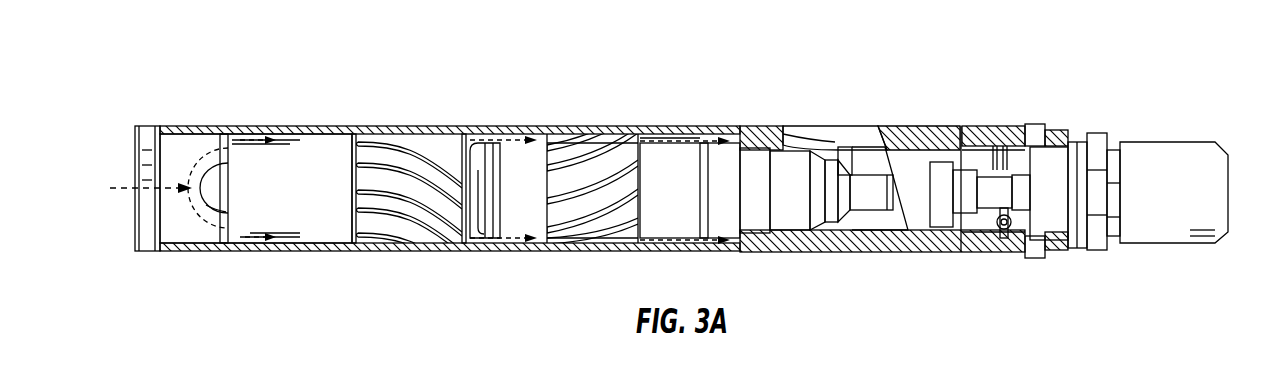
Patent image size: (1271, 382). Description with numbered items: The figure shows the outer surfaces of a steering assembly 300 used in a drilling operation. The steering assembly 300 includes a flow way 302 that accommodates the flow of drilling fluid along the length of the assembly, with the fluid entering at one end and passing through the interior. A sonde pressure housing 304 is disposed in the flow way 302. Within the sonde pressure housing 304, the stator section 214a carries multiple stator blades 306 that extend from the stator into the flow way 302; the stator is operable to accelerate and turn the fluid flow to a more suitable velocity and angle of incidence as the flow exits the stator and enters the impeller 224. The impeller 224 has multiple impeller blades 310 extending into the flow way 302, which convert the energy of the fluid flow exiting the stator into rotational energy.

The steering assembly 300 is at (197, 40).
The flow way 302 is at (120, 186).
The sonde pressure housing 304 is at (282, 130).
The turbine section 214a is at (391, 122).
The stator blades 306 is at (432, 205).
The impeller 224 is at (560, 140).
The impeller blades 310 is at (622, 166).